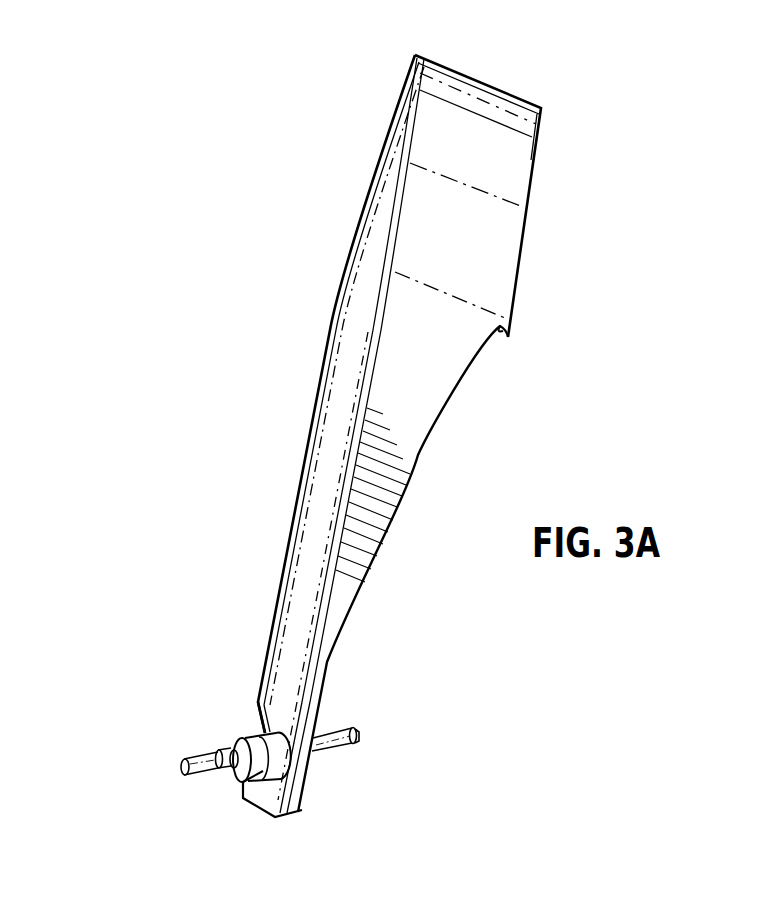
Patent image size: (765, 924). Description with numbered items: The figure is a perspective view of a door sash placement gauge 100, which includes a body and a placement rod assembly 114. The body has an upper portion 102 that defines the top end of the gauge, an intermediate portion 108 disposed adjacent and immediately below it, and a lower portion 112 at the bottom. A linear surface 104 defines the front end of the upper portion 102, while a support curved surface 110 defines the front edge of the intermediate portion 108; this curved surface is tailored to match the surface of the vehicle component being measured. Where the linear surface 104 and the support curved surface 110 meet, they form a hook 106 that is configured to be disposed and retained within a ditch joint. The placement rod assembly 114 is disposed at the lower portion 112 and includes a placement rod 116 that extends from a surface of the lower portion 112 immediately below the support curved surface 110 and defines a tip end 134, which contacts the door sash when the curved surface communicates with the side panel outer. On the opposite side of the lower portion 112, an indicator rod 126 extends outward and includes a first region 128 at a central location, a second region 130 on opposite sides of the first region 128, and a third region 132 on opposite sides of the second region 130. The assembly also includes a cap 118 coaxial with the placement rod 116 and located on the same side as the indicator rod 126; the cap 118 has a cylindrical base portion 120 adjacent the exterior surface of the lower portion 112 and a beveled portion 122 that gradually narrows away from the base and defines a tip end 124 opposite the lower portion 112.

The door sash placement gauge 100 is at (229, 174).
The upper portion 102 is at (495, 110).
The linear surface 104 is at (530, 200).
The hook 106 is at (505, 333).
The intermediate portion 108 is at (382, 382).
The support curved surface 110 is at (408, 480).
The lower portion 112 is at (256, 702).
The placement rod assembly 114 is at (328, 762).
The placement rod 116 is at (362, 750).
The cap 118 is at (284, 720).
The cylindrical base portion 120 is at (270, 765).
The beveled portion 122 is at (247, 772).
The tip end 124 is at (217, 772).
The indicator rod 126 is at (170, 757).
The first region 128 is at (226, 745).
The second region 130 is at (223, 757).
The third region 132 is at (217, 753).
The tip end 134 is at (357, 735).